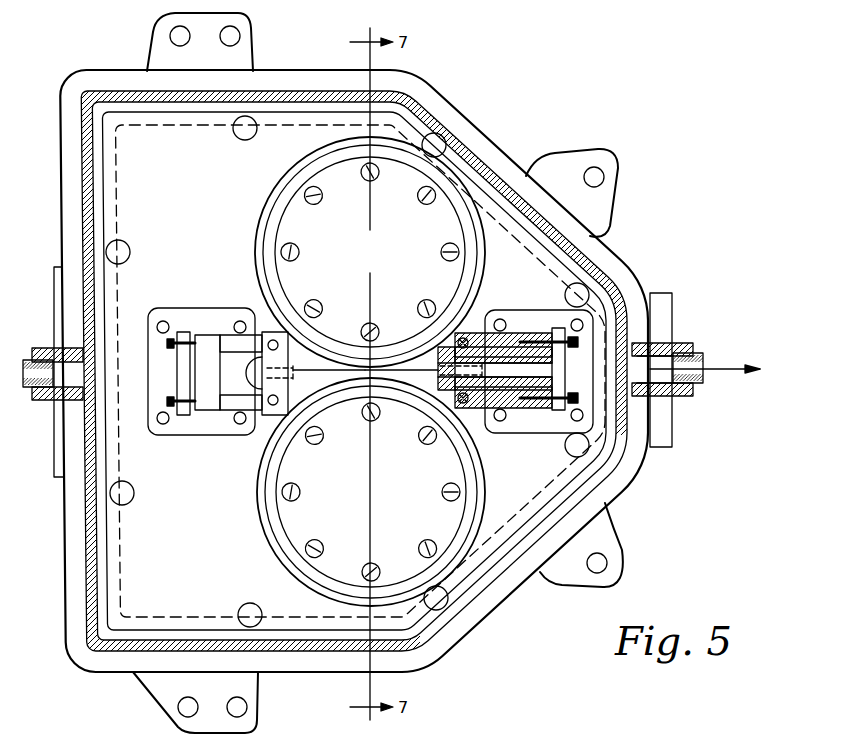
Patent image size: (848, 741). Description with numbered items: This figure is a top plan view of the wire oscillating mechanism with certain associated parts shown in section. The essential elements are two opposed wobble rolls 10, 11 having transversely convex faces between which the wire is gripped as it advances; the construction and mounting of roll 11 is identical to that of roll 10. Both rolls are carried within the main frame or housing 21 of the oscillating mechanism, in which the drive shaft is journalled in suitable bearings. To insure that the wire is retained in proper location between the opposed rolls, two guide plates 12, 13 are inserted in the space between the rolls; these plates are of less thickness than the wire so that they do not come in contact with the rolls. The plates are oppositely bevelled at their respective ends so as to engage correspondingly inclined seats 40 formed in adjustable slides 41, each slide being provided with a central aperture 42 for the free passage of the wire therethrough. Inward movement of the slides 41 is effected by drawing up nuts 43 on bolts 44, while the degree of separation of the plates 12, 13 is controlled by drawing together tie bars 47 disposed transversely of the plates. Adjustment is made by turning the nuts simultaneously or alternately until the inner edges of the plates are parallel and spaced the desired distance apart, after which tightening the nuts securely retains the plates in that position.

The wobble roll 10 is at (266, 200).
The wobble roll 11 is at (262, 521).
The guide plate 12 is at (324, 369).
The guide plate 13 is at (410, 369).
The main frame or housing 21 is at (84, 509).
The inclined seat 40 is at (440, 388).
The adjustable slide 41 is at (231, 350).
The central aperture 42 is at (513, 369).
The nut 43 is at (170, 400).
The bolt 44 is at (166, 343).
The tie bar 47 is at (259, 423).